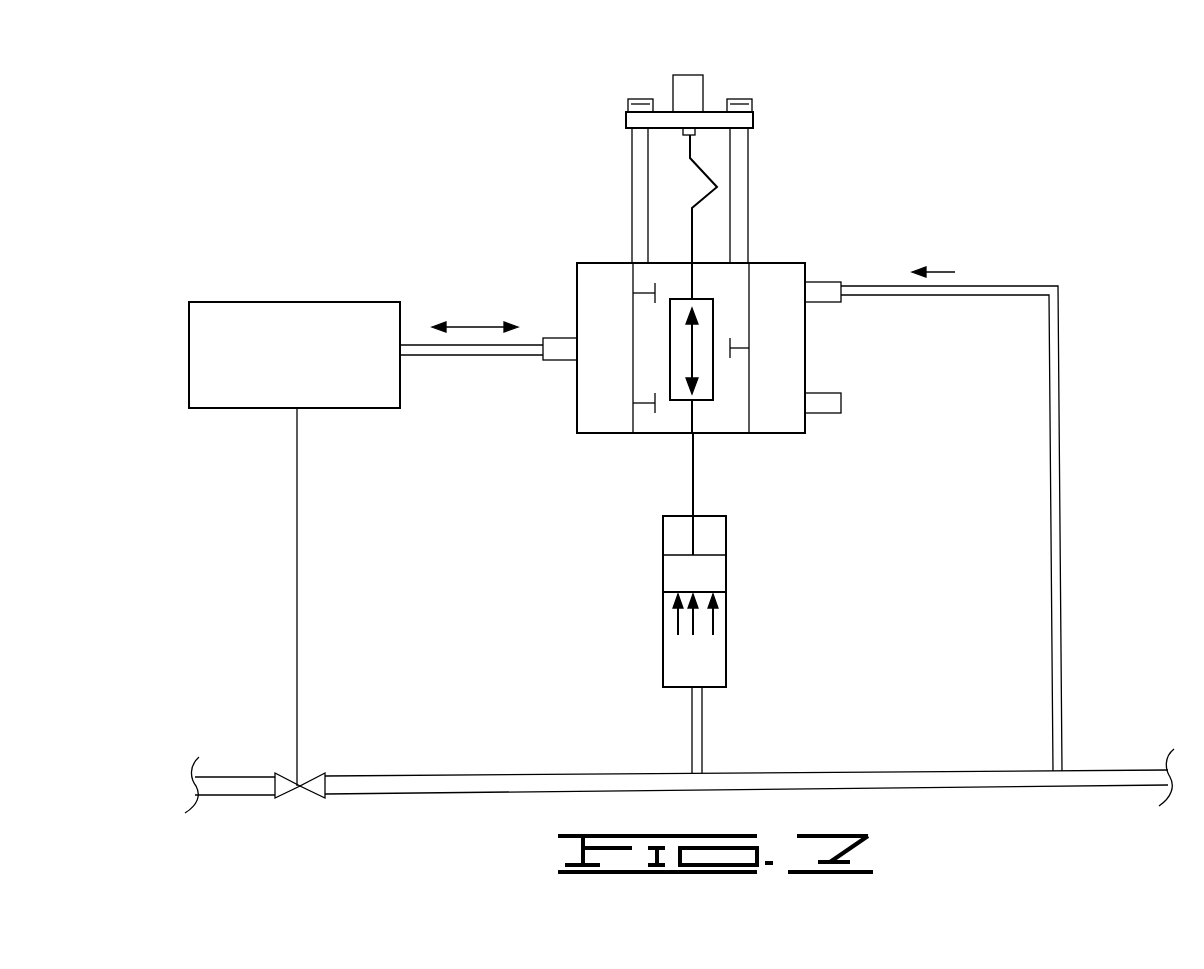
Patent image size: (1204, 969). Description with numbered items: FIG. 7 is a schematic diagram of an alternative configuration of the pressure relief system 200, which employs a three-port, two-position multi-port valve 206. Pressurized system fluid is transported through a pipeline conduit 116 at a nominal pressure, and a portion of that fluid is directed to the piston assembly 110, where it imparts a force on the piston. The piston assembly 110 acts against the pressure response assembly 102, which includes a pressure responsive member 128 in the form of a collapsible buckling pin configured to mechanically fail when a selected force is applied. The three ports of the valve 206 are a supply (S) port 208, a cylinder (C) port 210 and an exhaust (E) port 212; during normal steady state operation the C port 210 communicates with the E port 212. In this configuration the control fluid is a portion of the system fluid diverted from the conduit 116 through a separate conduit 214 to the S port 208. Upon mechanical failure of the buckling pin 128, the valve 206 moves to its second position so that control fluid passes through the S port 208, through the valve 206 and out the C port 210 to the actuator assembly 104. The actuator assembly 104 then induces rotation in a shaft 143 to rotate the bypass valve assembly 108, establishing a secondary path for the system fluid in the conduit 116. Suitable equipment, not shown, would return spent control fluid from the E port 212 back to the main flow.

The pressure response assembly 102 is at (788, 108).
The actuator assembly 104 is at (240, 302).
The bypass valve assembly 108 is at (305, 780).
The piston assembly 110 is at (750, 578).
The pipeline conduit 116 is at (787, 782).
The pressure responsive member 128 is at (698, 202).
The shaft 143 is at (297, 595).
The pressure relief system 200 is at (976, 180).
The multi-port valve 206 is at (777, 420).
The supply (S) port 208 is at (841, 303).
The cylinder (C) port 210 is at (560, 362).
The exhaust (E) port 212 is at (841, 414).
The conduit 214 is at (1063, 500).